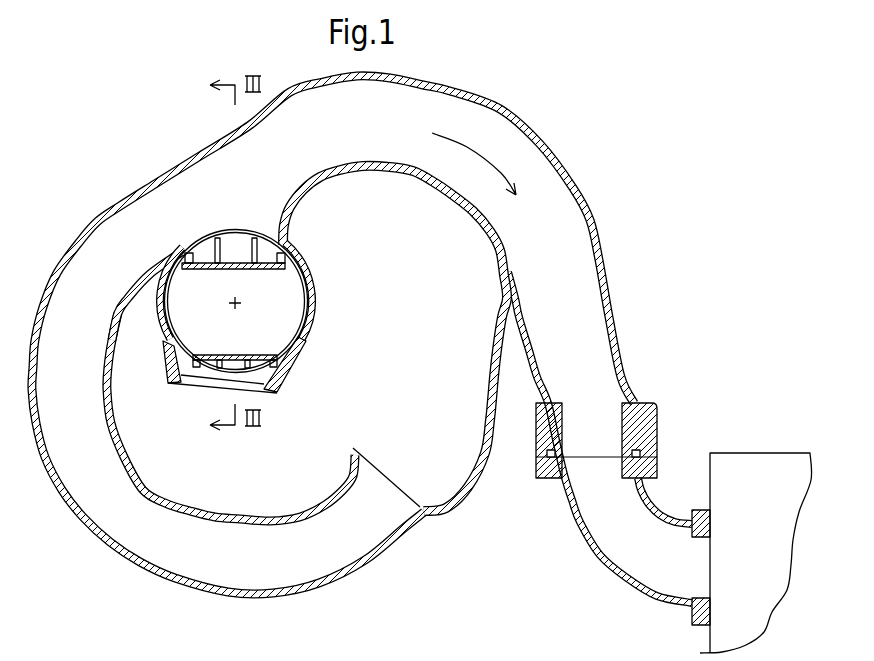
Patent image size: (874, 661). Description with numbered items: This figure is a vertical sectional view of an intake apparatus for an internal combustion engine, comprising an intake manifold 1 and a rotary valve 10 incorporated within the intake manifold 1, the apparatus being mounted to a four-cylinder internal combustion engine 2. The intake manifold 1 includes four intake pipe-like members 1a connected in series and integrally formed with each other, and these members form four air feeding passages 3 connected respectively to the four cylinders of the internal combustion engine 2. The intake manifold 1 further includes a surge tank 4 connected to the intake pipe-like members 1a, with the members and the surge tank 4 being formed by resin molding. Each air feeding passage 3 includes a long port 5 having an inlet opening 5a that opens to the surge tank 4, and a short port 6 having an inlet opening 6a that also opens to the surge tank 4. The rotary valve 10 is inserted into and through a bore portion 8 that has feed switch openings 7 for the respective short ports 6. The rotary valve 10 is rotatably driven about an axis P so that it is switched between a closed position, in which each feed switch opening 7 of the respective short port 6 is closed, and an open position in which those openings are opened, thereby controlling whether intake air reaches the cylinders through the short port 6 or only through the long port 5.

The intake manifold 1 is at (498, 95).
The intake pipe-like member 1a is at (118, 197).
The internal combustion engine 2 is at (764, 453).
The air feeding passage 3 is at (479, 162).
The surge tank 4 is at (416, 343).
The long port 5 is at (332, 586).
The inlet opening 5a is at (387, 477).
The short port 6 is at (258, 218).
The inlet opening 6a is at (205, 380).
The feed switch opening 7 is at (190, 252).
The bore portion 8 is at (318, 293).
The rotary valve 10 is at (308, 330).
The axis P is at (233, 306).